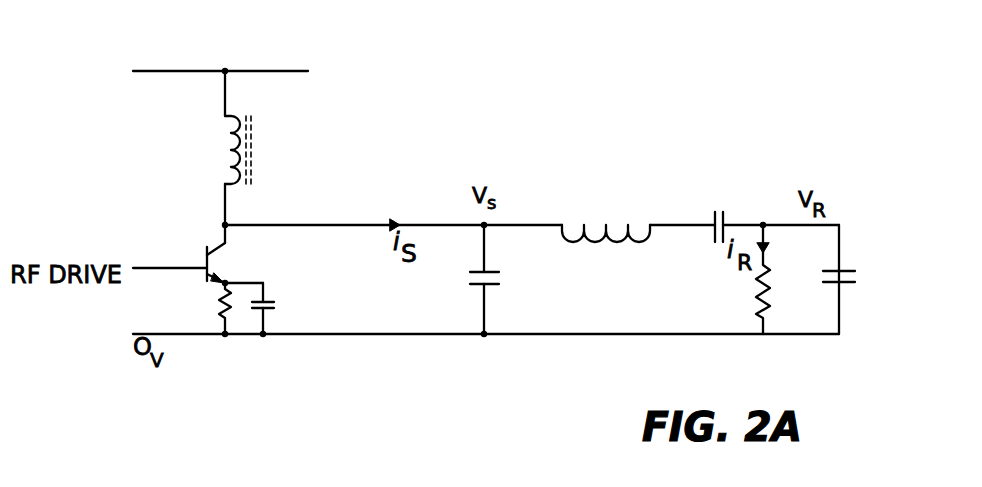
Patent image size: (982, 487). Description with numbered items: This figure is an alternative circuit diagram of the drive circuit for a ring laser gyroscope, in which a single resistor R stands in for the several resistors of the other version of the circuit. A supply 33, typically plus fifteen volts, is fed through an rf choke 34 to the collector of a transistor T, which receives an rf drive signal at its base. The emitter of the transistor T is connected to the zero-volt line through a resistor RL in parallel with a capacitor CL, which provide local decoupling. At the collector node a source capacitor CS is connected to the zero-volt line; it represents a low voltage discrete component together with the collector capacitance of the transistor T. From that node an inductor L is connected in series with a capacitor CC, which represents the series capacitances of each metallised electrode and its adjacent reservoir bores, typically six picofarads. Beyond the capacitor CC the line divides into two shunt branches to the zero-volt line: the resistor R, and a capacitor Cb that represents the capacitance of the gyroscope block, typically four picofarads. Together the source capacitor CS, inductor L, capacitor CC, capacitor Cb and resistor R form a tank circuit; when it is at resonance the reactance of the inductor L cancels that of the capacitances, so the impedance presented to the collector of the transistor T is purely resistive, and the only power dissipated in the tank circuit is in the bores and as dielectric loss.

The supply 33 is at (224, 64).
The rf choke 34 is at (198, 151).
The transistor T is at (179, 254).
The inductor L is at (606, 246).
The resistor R is at (775, 279).
The source capacitor CS is at (466, 279).
The capacitor CC is at (718, 206).
The capacitor Cb is at (855, 282).
The capacitor CL is at (281, 308).
The resistor RL is at (212, 308).